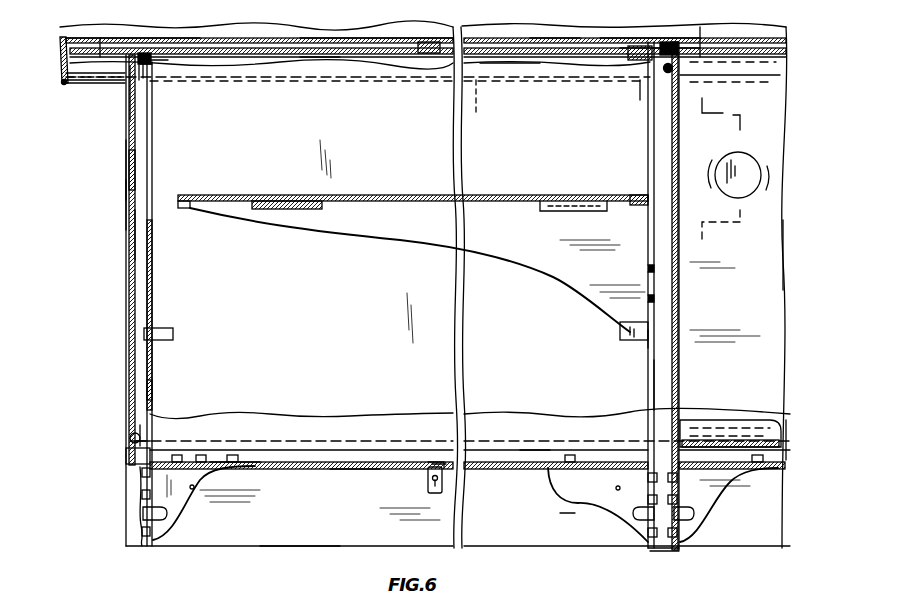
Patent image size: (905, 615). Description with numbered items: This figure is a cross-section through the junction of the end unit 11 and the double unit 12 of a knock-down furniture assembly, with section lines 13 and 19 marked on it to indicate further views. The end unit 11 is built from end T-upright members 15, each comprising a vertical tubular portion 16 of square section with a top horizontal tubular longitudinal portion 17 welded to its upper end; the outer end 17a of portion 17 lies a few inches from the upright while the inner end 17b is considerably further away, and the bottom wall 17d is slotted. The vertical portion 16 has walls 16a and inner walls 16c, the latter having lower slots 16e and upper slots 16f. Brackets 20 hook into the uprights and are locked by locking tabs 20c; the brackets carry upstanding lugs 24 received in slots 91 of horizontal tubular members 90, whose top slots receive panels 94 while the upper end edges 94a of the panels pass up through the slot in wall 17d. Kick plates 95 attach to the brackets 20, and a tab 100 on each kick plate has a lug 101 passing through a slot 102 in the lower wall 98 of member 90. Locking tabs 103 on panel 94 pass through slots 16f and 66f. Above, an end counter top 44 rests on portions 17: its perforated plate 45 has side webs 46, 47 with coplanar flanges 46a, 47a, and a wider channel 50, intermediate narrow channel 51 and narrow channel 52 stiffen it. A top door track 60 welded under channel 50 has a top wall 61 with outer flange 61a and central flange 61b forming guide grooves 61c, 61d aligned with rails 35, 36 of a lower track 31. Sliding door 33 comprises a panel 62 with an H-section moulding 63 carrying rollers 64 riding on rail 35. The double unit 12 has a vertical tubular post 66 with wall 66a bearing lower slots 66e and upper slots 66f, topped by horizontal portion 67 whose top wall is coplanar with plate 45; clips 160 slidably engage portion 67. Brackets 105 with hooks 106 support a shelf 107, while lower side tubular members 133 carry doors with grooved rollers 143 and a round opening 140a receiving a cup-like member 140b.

The end unit 11 is at (701, 40).
The double unit 12 is at (541, 452).
The section line 13 is at (100, 13).
The end T-upright member 15 is at (120, 153).
The vertical tubular portion 16 is at (156, 143).
The wall 16a is at (150, 170).
The inner wall 16c is at (152, 396).
The lower slot 16e is at (143, 478).
The upper slot 16f is at (151, 290).
The top horizontal tubular longitudinal portion 17 is at (318, 66).
The outer end 17a is at (66, 73).
The inner end 17b is at (641, 92).
The bottom wall 17d is at (486, 109).
The section line 19 is at (576, 513).
The bracket 20 is at (185, 497).
The locking tab 20c is at (640, 523).
The upstanding lug 24 is at (234, 454).
The lower track 31 is at (133, 448).
The sliding door 33 is at (118, 200).
The rail 35 is at (128, 440).
The rail 36 is at (193, 451).
The end counter top 44 is at (364, 27).
The top perforated sheet metal plate 45 is at (548, 44).
The side web 46 is at (60, 52).
The flange 46a is at (70, 40).
The side web 47 is at (636, 40).
The flange 47a is at (642, 62).
The wider channel 50 is at (150, 40).
The intermediate narrow channel 51 is at (436, 54).
The narrow channel 52 is at (630, 58).
The top door track 60 is at (154, 64).
The top wall 61 is at (162, 52).
The outer flange 61a is at (160, 66).
The central flange 61b is at (144, 76).
The guide groove 61c is at (128, 86).
The guide groove 61d is at (150, 66).
The panel 62 is at (133, 220).
The moulding 63 is at (132, 434).
The roller 64 is at (136, 428).
The vertical tubular post 66 is at (682, 375).
The wall 66a is at (648, 384).
The slot 66e is at (633, 515).
The upper slot 66f is at (648, 348).
The horizontal tubular portion 67 is at (660, 48).
The horizontal tubular member 90 is at (326, 471).
The slot 91 is at (246, 460).
The panel 94 is at (322, 303).
The upper end edge 94a is at (508, 66).
The kick plate 95 is at (300, 547).
The lower wall 98 is at (353, 470).
The tab 100 is at (428, 483).
The lug 101 is at (440, 464).
The slot 102 is at (432, 465).
The locking tab 103 is at (173, 328).
The bracket 105 is at (531, 245).
The hook 106 is at (728, 166).
The shelf 107 is at (413, 194).
The side tubular member 133 is at (789, 440).
The round opening 140a is at (742, 202).
The cup-like member 140b is at (769, 255).
The grooved roller 143 is at (706, 430).
The clip 160 is at (690, 75).